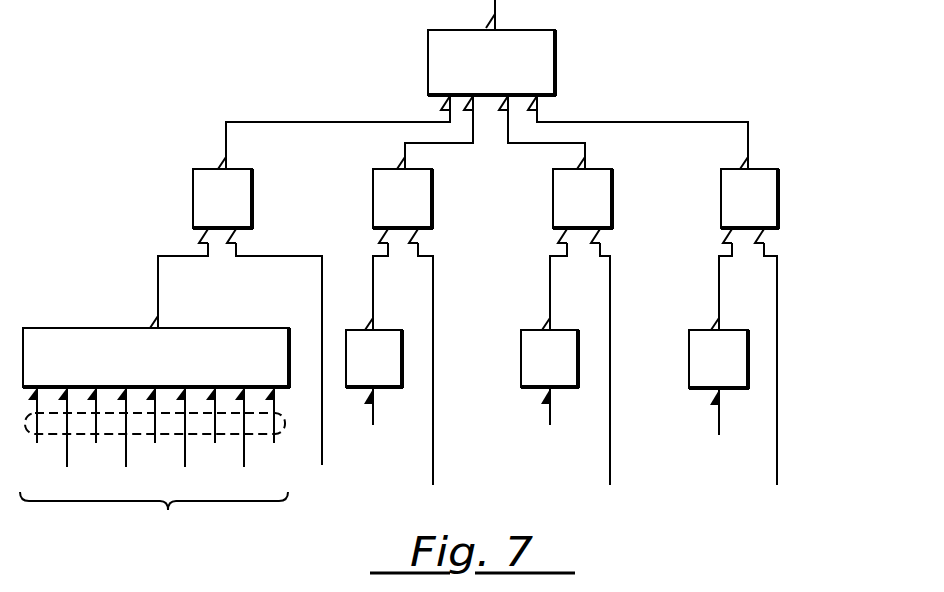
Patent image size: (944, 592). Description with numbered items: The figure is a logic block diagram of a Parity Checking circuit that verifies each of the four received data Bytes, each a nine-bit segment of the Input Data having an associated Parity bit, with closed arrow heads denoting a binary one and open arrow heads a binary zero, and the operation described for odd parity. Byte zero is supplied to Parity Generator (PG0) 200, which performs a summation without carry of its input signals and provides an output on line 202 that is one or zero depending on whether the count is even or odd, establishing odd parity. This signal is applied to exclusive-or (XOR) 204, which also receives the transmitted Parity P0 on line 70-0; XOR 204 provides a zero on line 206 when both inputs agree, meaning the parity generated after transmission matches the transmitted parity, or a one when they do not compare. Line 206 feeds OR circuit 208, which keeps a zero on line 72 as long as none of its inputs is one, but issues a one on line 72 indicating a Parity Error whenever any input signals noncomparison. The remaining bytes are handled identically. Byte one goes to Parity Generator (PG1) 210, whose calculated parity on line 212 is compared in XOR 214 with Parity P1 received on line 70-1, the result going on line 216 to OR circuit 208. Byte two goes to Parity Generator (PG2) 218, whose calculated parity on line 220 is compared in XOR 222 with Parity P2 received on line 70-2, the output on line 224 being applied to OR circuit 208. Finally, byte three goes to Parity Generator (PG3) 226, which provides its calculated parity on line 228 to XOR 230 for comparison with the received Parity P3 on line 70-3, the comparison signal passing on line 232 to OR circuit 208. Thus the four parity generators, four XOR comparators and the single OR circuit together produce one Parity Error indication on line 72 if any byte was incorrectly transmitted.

The Parity Error output line 72 is at (497, 12).
The OR circuit 208 is at (563, 64).
The XOR 204 output line 206 is at (377, 121).
The XOR 214 output line 216 is at (405, 149).
The XOR 222 output line 224 is at (585, 153).
The XOR 230 output line 232 is at (679, 121).
The exclusive-or circuit 204 is at (193, 200).
The exclusive-or circuit 214 is at (373, 201).
The exclusive-or circuit 222 is at (553, 200).
The exclusive-or circuit 230 is at (721, 200).
The Parity Generator PG0 output line 202 is at (158, 291).
The Parity P0 line 70-0 is at (322, 289).
The Parity Generator (PG0) 200 is at (93, 320).
The Parity Generator (PG1) 210 is at (363, 314).
The Parity Generator PG1 output line 212 is at (379, 300).
The Parity P1 line 70-1 is at (433, 284).
The Parity Generator (PG2) 218 is at (521, 334).
The Parity Generator PG2 output line 220 is at (552, 300).
The Parity P2 line 70-2 is at (614, 281).
The Parity Generator (PG3) 226 is at (689, 334).
The Parity Generator PG3 output line 228 is at (724, 300).
The Parity P3 line 70-3 is at (777, 295).